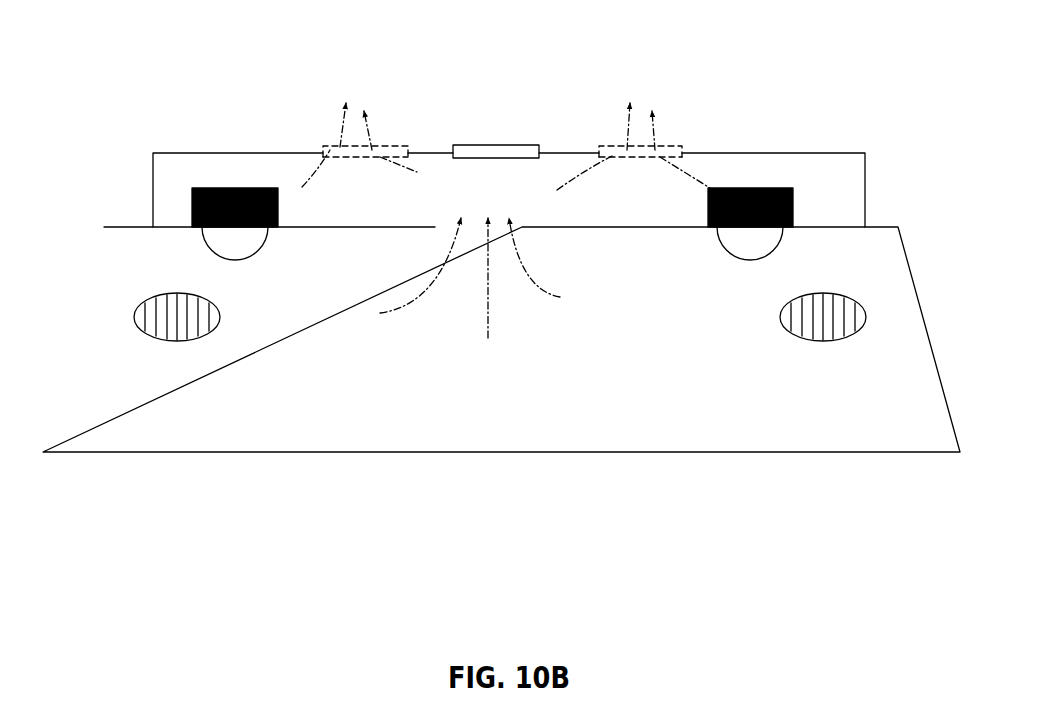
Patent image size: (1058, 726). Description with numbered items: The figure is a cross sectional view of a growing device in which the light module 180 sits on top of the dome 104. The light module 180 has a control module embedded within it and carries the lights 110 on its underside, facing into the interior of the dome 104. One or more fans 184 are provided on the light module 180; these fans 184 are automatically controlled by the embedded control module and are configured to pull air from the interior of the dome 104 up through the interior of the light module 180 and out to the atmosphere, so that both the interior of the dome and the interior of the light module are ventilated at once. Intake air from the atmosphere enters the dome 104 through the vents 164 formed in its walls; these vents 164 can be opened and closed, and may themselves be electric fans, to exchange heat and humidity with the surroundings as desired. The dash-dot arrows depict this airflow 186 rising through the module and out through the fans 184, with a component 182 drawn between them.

The dome 104 is at (952, 455).
The lights 110 is at (252, 260).
The vents 164 is at (200, 341).
The light module 180 is at (874, 158).
The heat sink element 182 is at (504, 134).
The fans 184 is at (310, 136).
The airflow 186 is at (506, 220).